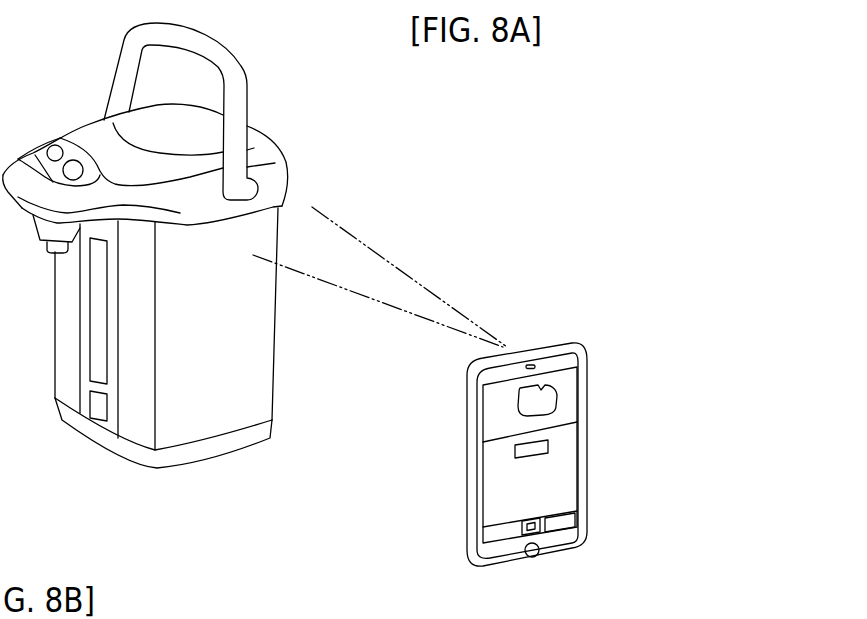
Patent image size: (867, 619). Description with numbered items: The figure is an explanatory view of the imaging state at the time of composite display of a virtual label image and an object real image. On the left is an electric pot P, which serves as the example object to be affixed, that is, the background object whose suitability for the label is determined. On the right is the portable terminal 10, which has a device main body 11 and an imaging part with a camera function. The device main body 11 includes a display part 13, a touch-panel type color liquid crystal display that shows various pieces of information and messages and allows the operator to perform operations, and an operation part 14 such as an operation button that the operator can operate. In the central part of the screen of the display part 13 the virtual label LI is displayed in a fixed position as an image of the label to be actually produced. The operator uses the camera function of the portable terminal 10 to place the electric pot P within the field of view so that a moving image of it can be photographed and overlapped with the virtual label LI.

The electric pot P is at (292, 142).
The portable terminal 10 is at (533, 437).
The device main body 11 is at (470, 458).
The display part 13 is at (572, 462).
The virtual label LI is at (543, 445).
The operation part 14 is at (537, 552).